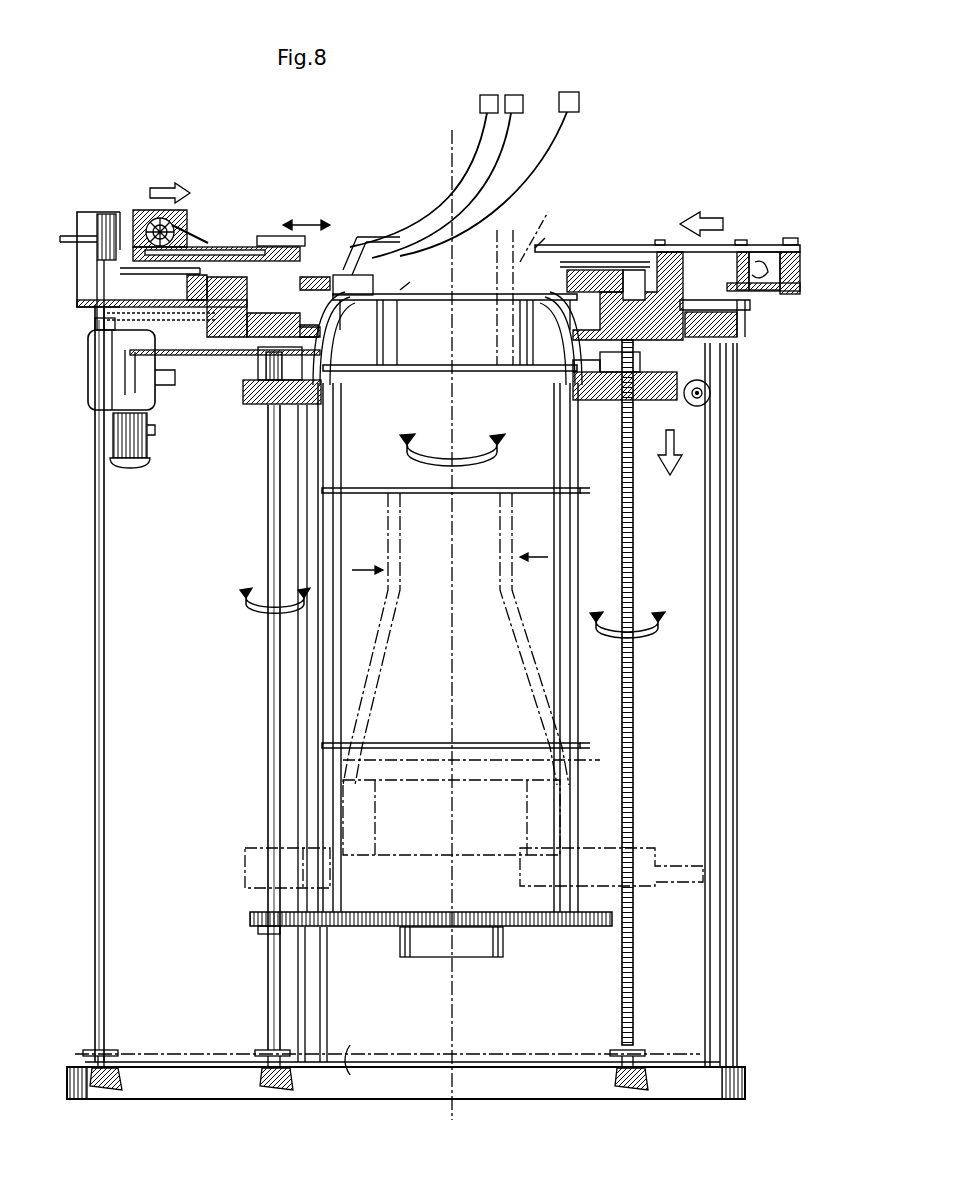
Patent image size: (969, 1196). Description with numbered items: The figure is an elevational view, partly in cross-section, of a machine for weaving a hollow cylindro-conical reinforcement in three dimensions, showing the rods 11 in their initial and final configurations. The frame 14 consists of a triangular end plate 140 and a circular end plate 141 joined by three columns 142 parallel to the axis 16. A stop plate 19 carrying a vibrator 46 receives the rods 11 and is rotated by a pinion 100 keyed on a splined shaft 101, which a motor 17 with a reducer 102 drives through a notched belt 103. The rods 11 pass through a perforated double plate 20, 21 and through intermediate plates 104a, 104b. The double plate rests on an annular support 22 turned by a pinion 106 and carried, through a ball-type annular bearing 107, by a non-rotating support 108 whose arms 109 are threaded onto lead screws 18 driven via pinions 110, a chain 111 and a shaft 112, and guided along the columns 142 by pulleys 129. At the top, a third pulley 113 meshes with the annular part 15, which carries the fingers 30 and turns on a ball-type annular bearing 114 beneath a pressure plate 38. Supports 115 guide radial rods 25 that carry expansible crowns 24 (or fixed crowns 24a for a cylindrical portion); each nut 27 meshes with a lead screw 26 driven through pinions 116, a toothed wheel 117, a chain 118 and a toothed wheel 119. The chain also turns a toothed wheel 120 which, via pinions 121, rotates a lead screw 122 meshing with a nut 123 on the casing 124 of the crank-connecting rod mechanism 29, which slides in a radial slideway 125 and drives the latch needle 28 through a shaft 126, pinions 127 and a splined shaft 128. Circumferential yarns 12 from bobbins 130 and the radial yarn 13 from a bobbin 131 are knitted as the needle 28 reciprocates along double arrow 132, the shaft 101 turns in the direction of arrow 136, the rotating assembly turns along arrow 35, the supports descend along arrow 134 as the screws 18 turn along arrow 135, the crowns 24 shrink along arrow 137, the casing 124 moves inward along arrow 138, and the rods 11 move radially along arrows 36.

The rods 11 is at (393, 598).
The circumferential yarns 12 is at (510, 125).
The radial yarns 13 is at (568, 125).
The frame 14 is at (372, 1108).
The annular part 15 is at (333, 320).
The axis 16 is at (448, 688).
The motor 17 is at (120, 470).
The lead screws 18 is at (633, 572).
The stop plate 19 is at (527, 928).
The upper face of double plate 20 is at (477, 292).
The lower face of double plate 21 is at (482, 385).
The annular support 22 is at (318, 388).
The expansible crowns 24 is at (537, 245).
The fixed crowns 24a is at (540, 212).
The radial rods 25 is at (592, 270).
The lead screw 26 is at (758, 292).
The nut 27 is at (787, 246).
The latch needle 28 is at (367, 265).
The crank-connecting rod mechanism 29 is at (193, 230).
The fingers 30 is at (400, 290).
The arrow 35 is at (442, 493).
The arrows 36 is at (352, 570).
The pressure plate 38 is at (336, 275).
The vibrator 46 is at (417, 948).
The pinion 100 is at (258, 930).
The splined shaft 101 is at (298, 812).
The reducer 102 is at (97, 378).
The notched belt 103 is at (200, 380).
The intermediate plate 104a is at (590, 493).
The intermediate plate 104b is at (585, 745).
The pinion 106 is at (250, 413).
The ball-type annular bearing 107 is at (580, 402).
The support 108 is at (274, 404).
The arms 109 is at (660, 402).
The pinions 110 is at (118, 1055).
The chain 111 is at (495, 1054).
The shaft 112 is at (106, 668).
The third pulley 113 is at (265, 290).
The ball-type annular bearing 114 is at (573, 362).
The supports 115 is at (653, 262).
The pinions 116 is at (720, 278).
The toothed wheel 117 is at (742, 338).
The chain 118 is at (690, 338).
The toothed wheel 119 is at (113, 337).
The toothed wheel 120 is at (168, 320).
The pinions 121 is at (197, 300).
The lead screw 122 is at (118, 272).
The nut 123 is at (97, 308).
The casing 124 is at (200, 246).
The radial slideway 125 is at (262, 247).
The shaft 126 is at (97, 273).
The pinions 127 is at (100, 212).
The splined shaft 128 is at (118, 212).
The pulleys 129 is at (708, 402).
The bobbins 130 is at (512, 95).
The bobbin 131 is at (566, 92).
The double arrow 132 is at (300, 238).
The arrow 134 is at (670, 478).
The arrow 135 is at (640, 640).
The arrow 136 is at (255, 592).
The arrow 137 is at (698, 214).
The arrow 138 is at (160, 186).
The end plate 140 is at (352, 1055).
The end plate 141 is at (655, 318).
The columns 142 is at (300, 688).